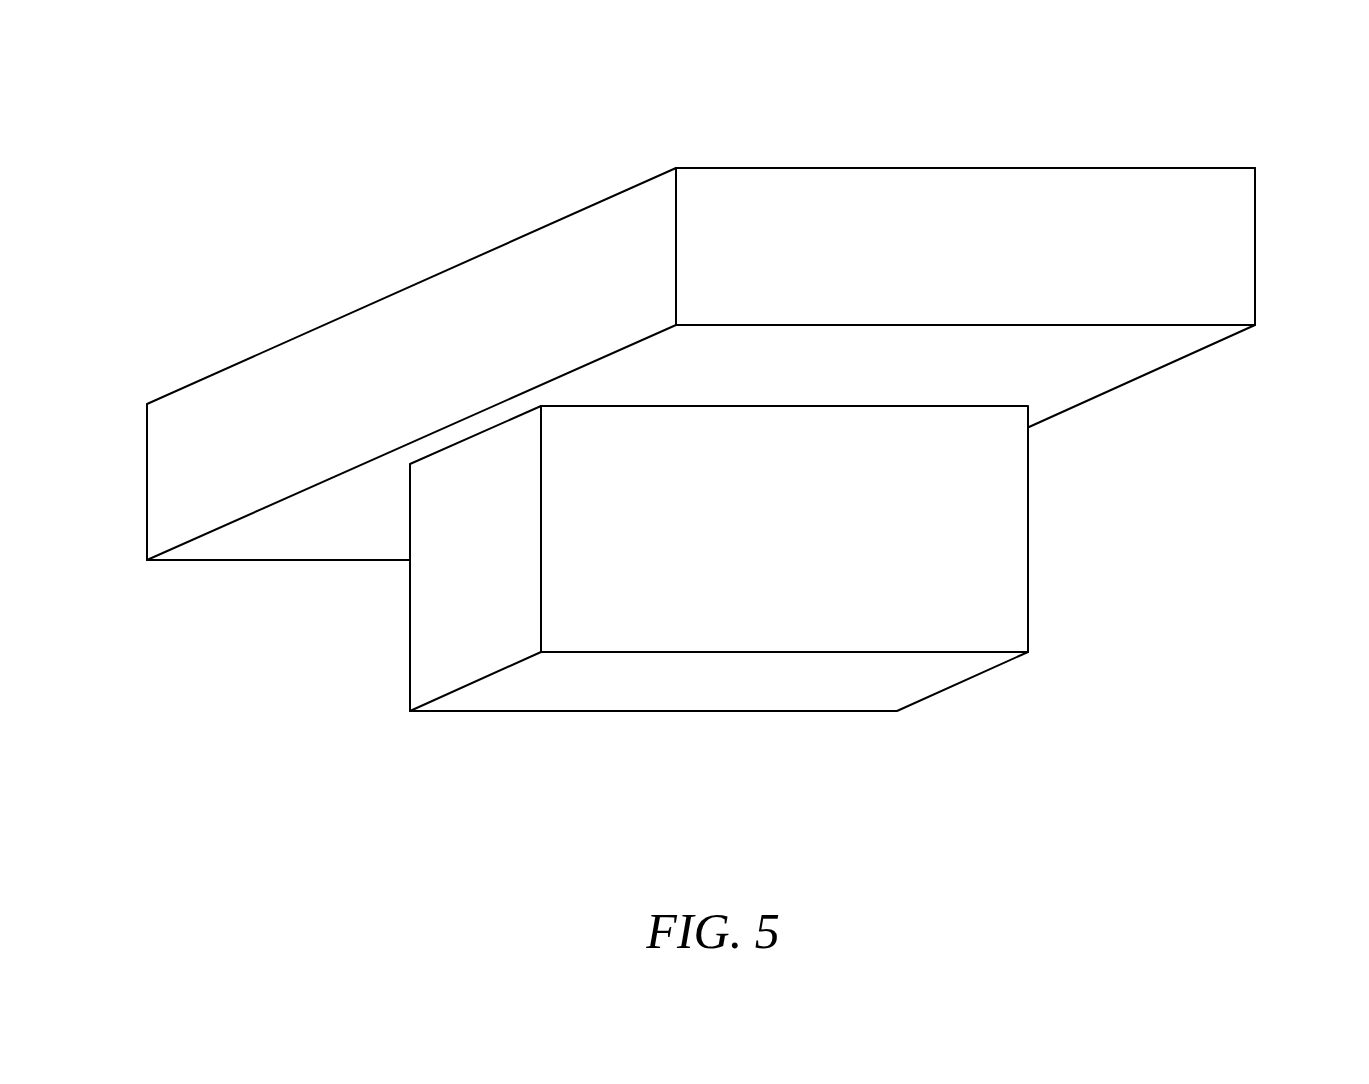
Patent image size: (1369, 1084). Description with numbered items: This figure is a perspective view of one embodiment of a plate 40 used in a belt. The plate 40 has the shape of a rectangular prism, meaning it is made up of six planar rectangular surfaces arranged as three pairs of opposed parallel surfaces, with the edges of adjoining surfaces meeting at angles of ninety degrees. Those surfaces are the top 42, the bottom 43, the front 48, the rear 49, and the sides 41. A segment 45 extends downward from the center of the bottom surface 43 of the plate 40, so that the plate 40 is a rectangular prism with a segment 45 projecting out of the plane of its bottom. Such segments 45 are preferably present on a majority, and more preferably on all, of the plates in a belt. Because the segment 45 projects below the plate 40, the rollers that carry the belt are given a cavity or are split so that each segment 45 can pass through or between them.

The plate 40 is at (701, 304).
The sides 41 is at (953, 252).
The top 42 is at (965, 168).
The bottom 43 is at (322, 536).
The segment 45 is at (759, 536).
The front 48 is at (396, 367).
The rear 49 is at (1098, 397).